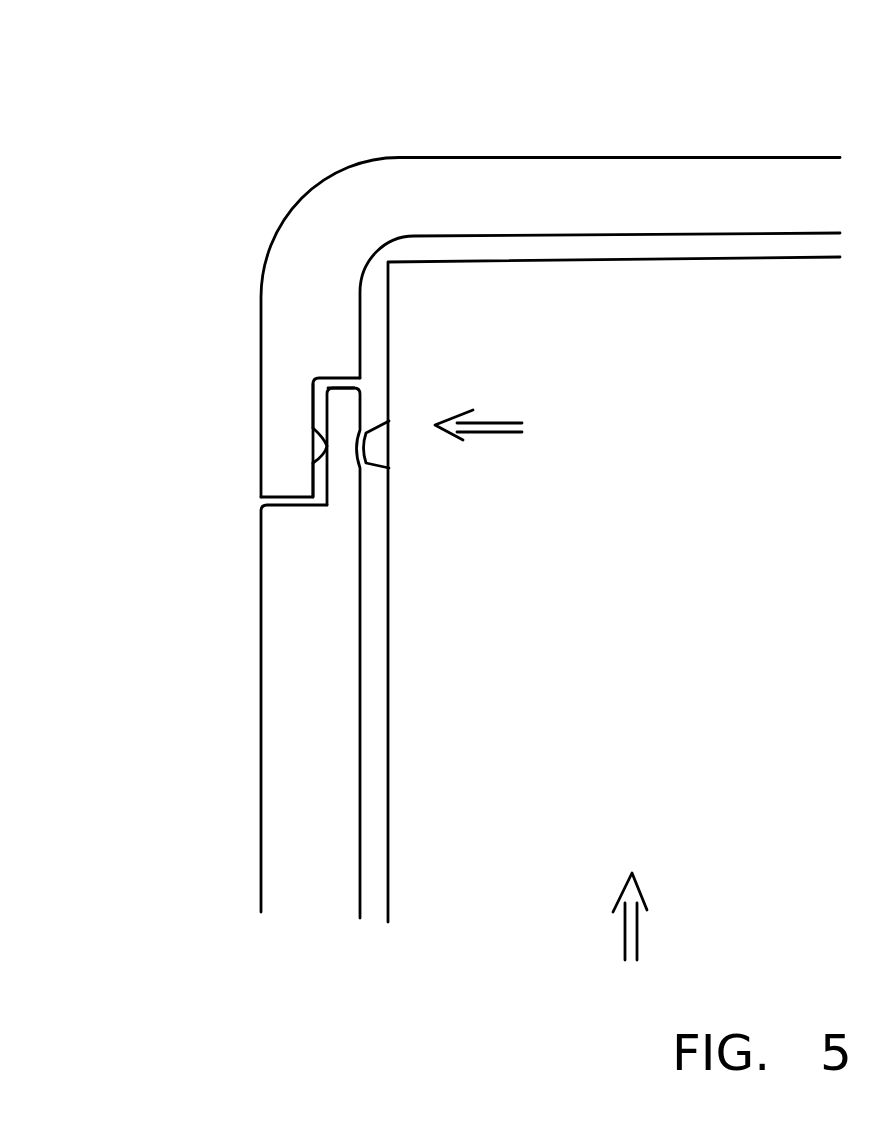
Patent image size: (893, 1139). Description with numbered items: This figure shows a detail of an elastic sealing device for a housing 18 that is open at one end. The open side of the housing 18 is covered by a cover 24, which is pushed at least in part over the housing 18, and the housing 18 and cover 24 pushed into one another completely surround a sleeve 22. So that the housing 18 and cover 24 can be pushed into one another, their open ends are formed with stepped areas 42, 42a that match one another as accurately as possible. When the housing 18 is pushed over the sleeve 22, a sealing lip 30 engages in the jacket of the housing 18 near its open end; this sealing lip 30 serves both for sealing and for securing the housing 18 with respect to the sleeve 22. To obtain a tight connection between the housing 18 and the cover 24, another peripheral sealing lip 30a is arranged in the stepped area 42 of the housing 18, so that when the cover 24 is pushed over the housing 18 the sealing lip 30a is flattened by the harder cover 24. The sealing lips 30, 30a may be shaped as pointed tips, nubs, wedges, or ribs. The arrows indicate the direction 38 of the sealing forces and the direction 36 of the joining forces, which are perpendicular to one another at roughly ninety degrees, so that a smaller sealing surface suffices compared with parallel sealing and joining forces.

The housing 18 is at (287, 657).
The sleeve 22 is at (483, 753).
The cover 24 is at (552, 175).
The sealing lip 30 is at (379, 453).
The peripheral sealing lip 30a is at (337, 448).
The direction of the joining forces 36 is at (660, 927).
The direction of the sealing forces 38 is at (501, 409).
The stepped area 42 is at (338, 447).
The stepped area 42a is at (283, 412).